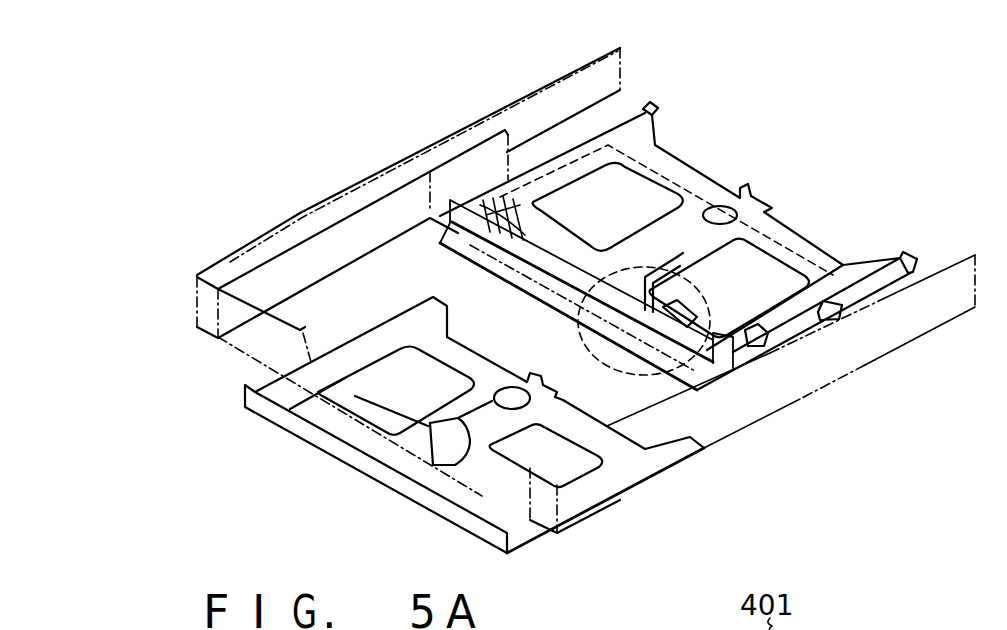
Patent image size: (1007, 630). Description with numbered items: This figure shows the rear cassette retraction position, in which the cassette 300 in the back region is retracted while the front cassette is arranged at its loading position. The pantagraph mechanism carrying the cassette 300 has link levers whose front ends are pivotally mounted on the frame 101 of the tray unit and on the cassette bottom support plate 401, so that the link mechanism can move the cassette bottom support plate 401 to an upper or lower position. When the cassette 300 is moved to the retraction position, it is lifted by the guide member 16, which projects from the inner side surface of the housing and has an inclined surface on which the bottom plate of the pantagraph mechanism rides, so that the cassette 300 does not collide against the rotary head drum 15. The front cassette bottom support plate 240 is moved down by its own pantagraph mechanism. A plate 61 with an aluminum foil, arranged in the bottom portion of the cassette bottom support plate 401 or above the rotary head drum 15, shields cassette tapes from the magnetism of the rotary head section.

The frame 101 is at (357, 187).
The cassette bottom support plate 401 is at (800, 240).
The guide member 16 is at (533, 205).
The plate 61 is at (843, 262).
The rotary head drum 15 is at (613, 365).
The cassette bottom support plate 240 is at (480, 530).
The cassette 300 is at (873, 629).